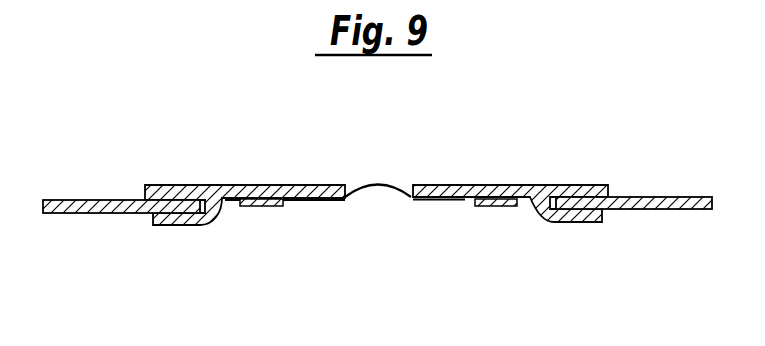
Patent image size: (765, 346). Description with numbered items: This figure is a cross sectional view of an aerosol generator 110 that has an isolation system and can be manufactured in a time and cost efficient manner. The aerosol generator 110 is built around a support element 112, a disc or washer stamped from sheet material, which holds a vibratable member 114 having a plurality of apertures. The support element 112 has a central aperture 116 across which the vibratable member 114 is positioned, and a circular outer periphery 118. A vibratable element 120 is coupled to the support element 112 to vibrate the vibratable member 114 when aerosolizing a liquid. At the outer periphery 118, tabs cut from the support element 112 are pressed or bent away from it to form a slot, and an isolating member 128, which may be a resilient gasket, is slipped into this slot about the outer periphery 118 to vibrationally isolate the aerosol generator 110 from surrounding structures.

The aerosol generator 110 is at (463, 143).
The support element 112 is at (178, 185).
The vibratable member 114 is at (390, 199).
The central aperture 116 is at (365, 200).
The circular outer periphery 118 is at (609, 186).
The vibratable element 120 is at (498, 206).
The isolating member 128 is at (87, 213).